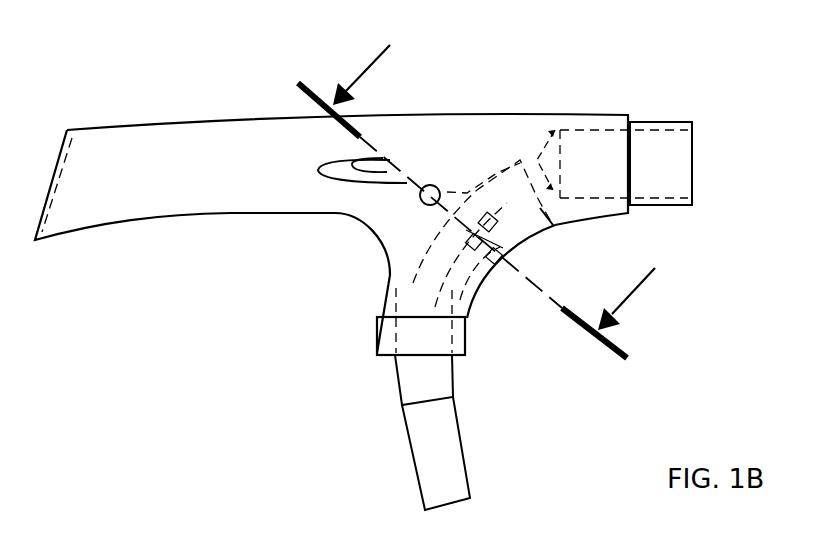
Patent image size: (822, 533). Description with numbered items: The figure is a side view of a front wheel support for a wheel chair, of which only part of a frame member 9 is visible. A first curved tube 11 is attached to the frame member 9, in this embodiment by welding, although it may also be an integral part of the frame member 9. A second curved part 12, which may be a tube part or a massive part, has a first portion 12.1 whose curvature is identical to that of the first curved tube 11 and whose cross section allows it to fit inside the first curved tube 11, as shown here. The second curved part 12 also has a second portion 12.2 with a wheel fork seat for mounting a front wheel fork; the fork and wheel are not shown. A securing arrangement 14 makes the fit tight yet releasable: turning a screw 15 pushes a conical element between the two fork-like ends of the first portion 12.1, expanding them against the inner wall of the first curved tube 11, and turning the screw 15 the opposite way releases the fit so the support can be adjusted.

The frame member 9 is at (182, 127).
The first curved tube 11 is at (505, 243).
The second curved part 12 is at (405, 356).
The first portion 12.1 is at (397, 372).
The second portion 12.2 is at (450, 467).
The securing arrangement 14 is at (522, 257).
The screw 15 is at (496, 268).